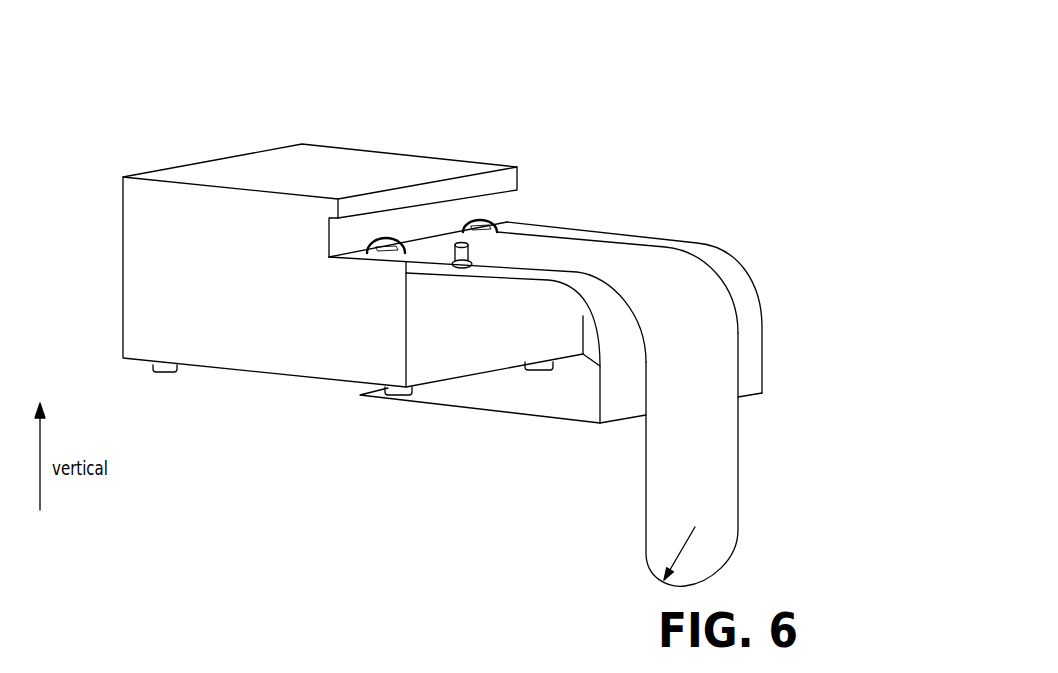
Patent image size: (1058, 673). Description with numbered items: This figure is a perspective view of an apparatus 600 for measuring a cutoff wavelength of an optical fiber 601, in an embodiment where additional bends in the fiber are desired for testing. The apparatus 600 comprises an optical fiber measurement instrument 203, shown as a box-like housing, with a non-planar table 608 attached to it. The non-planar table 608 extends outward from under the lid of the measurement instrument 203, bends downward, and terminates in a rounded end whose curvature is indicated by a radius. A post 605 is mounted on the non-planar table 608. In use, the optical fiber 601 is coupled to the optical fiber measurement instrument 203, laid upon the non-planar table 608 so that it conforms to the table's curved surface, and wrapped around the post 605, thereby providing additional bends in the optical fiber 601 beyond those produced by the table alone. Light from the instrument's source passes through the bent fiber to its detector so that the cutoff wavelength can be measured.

The optical fiber measurement instrument 203 is at (253, 322).
The apparatus 600 is at (757, 100).
The optical fiber 601 is at (642, 462).
The post 605 is at (469, 250).
The non-planar table 608 is at (632, 272).